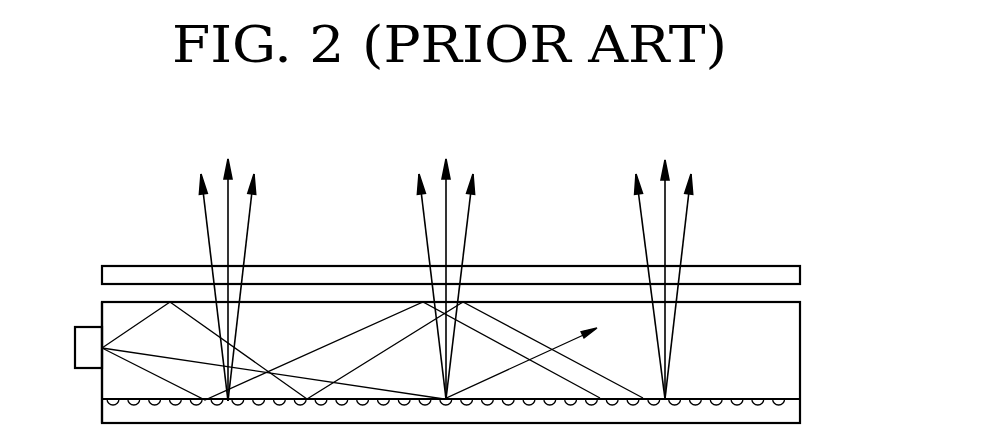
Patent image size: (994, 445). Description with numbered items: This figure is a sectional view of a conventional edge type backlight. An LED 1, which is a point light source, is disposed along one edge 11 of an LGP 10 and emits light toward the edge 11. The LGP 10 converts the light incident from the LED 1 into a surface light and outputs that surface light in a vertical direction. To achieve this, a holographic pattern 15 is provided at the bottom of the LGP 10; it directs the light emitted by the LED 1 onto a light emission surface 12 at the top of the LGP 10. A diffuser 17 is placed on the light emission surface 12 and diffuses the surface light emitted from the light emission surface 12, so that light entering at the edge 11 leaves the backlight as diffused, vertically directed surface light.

The LED 1 is at (75, 347).
The LGP 10 is at (494, 291).
The edge 11 is at (102, 320).
The light emission surface 12 is at (466, 321).
The holographic pattern 15 is at (486, 411).
The diffuser 17 is at (800, 277).